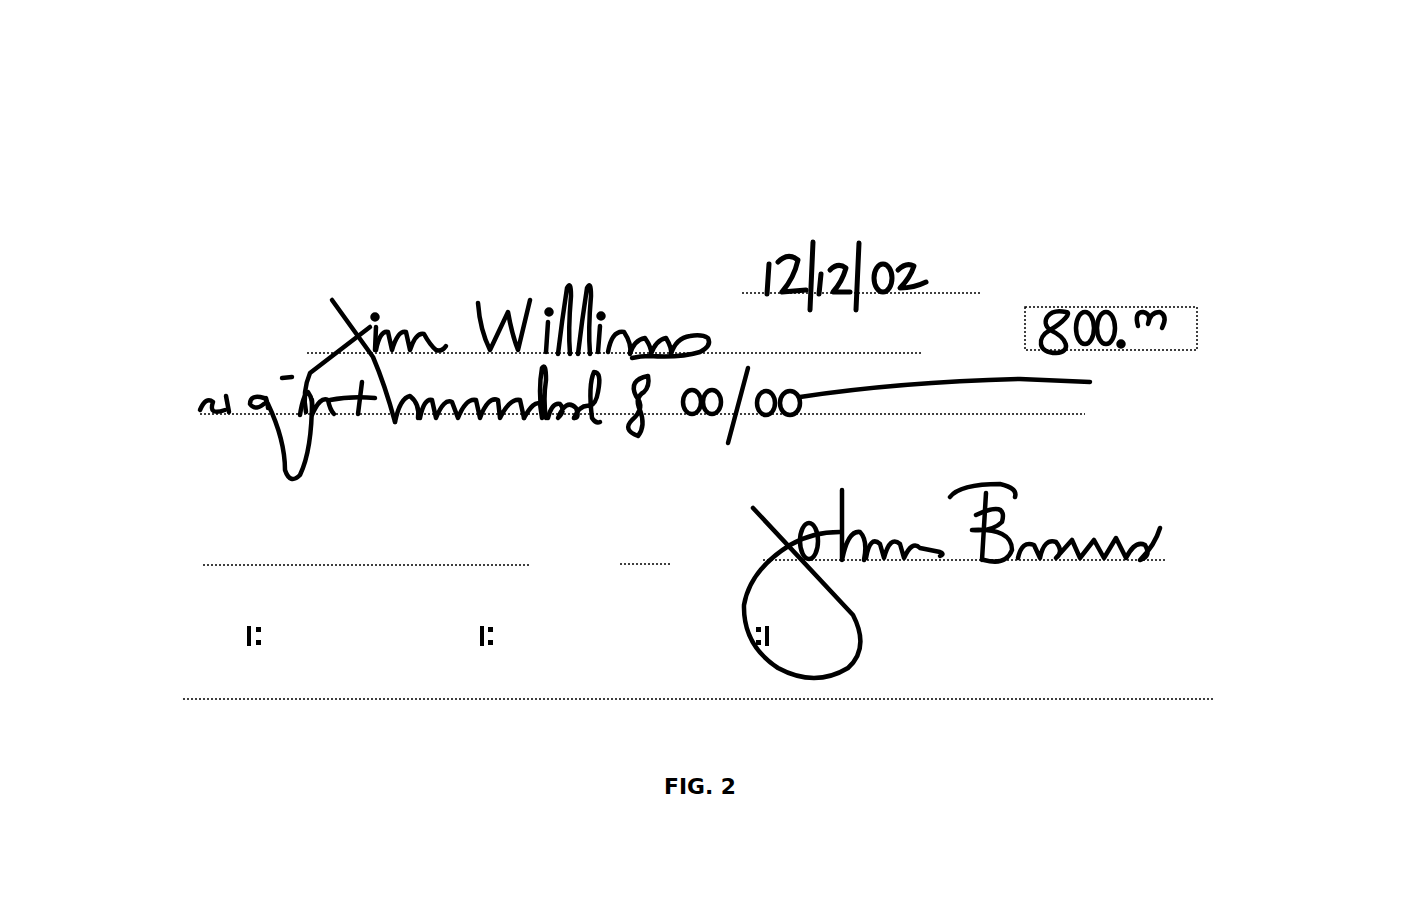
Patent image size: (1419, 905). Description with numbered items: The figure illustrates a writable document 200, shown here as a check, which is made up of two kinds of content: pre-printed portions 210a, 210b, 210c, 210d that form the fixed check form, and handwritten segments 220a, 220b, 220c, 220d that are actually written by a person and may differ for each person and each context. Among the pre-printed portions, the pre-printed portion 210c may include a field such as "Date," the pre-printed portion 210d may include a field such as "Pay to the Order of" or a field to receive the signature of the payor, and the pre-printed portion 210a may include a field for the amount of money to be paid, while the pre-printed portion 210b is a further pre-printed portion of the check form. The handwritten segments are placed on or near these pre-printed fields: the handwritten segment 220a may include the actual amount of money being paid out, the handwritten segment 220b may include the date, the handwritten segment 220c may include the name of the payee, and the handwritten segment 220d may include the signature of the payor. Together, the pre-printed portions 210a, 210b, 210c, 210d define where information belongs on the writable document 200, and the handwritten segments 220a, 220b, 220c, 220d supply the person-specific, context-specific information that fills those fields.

The writable document 200 is at (210, 117).
The pre-printed portion 210a is at (1193, 342).
The pre-printed portion 210b is at (1178, 558).
The pre-printed portion 210c is at (192, 250).
The pre-printed portion 210d is at (195, 342).
The handwritten segment 220a is at (1058, 300).
The handwritten segment 220b is at (777, 262).
The handwritten segment 220c is at (553, 307).
The handwritten segment 220d is at (1088, 562).